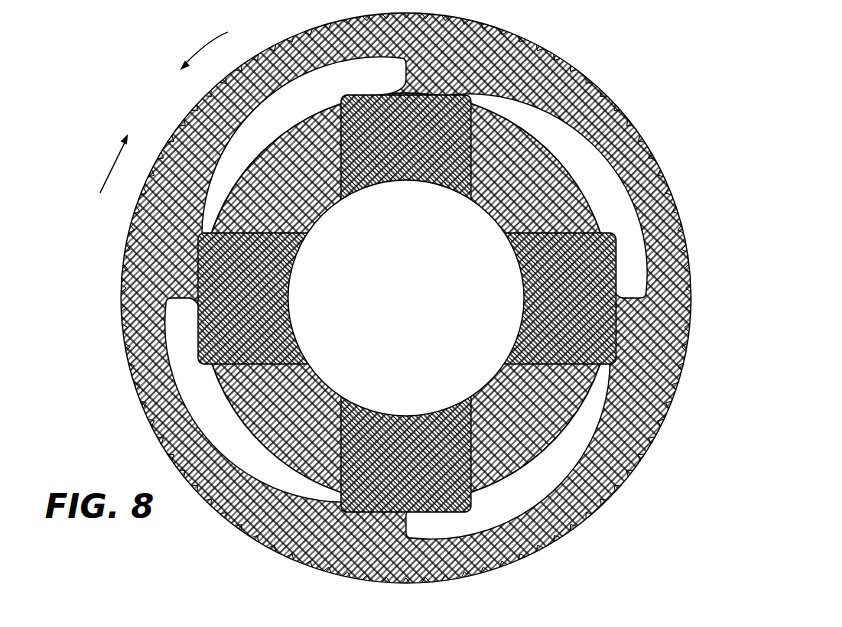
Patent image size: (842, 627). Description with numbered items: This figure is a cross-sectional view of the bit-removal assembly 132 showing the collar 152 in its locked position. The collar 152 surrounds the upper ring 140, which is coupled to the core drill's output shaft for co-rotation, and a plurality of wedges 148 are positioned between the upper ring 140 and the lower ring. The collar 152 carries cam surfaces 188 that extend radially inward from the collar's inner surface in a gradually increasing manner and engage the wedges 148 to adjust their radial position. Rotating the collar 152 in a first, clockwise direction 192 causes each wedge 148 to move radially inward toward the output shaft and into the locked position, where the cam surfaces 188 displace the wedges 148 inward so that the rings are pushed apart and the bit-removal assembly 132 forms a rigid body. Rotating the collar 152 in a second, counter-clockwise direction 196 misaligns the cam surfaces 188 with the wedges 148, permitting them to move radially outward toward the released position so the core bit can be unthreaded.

The bit-removal assembly 132 is at (593, 46).
The upper ring 140 is at (531, 440).
The wedges 148 is at (441, 113).
The collar 152 is at (124, 268).
The cam surface 188 is at (582, 152).
The first direction 192 is at (104, 178).
The second direction 196 is at (201, 50).